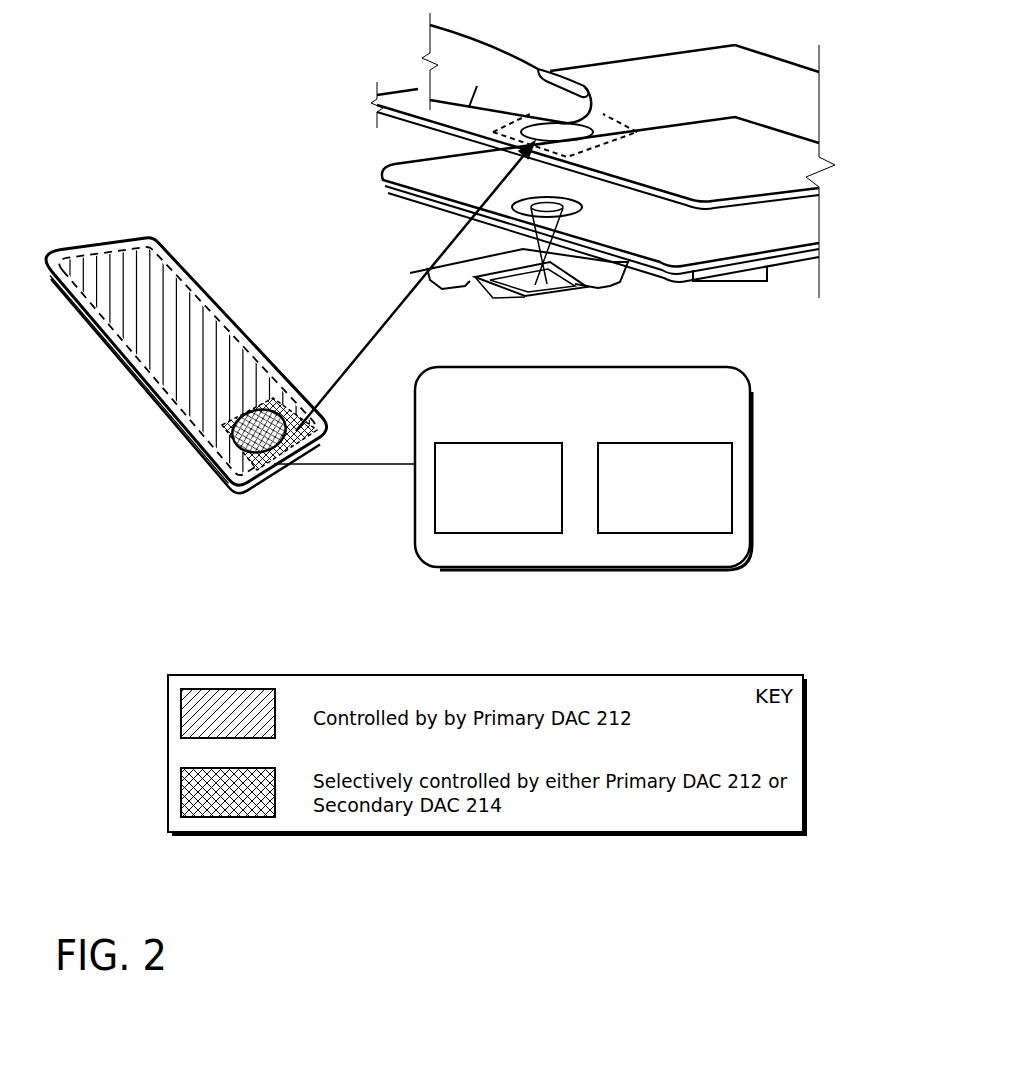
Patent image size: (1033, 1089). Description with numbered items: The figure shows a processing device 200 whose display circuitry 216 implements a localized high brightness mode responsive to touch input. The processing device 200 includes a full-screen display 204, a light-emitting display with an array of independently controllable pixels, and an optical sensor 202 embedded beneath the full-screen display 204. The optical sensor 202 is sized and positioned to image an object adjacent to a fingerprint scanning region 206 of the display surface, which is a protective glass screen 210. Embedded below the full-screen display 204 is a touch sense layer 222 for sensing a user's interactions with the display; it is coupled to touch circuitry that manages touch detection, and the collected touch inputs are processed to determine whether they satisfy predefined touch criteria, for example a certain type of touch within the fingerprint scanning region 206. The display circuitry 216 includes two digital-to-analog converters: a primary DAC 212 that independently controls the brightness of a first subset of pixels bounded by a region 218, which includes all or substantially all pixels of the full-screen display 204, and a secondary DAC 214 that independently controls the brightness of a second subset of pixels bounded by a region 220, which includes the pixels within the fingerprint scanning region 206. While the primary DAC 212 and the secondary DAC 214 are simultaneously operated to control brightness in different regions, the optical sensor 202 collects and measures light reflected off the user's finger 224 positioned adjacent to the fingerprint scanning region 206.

The processing device 200 is at (167, 199).
The optical sensor 202 is at (518, 297).
The full-screen display 204 is at (211, 368).
The fingerprint scanning region 206 is at (620, 122).
The protective glass screen 210 is at (714, 168).
The primary DAC 212 is at (481, 521).
The secondary DAC 214 is at (648, 521).
The display circuitry 216 is at (565, 423).
The region 218 is at (210, 306).
The region 220 is at (300, 427).
The touch sense layer 222 is at (432, 198).
The user's finger 224 is at (540, 66).